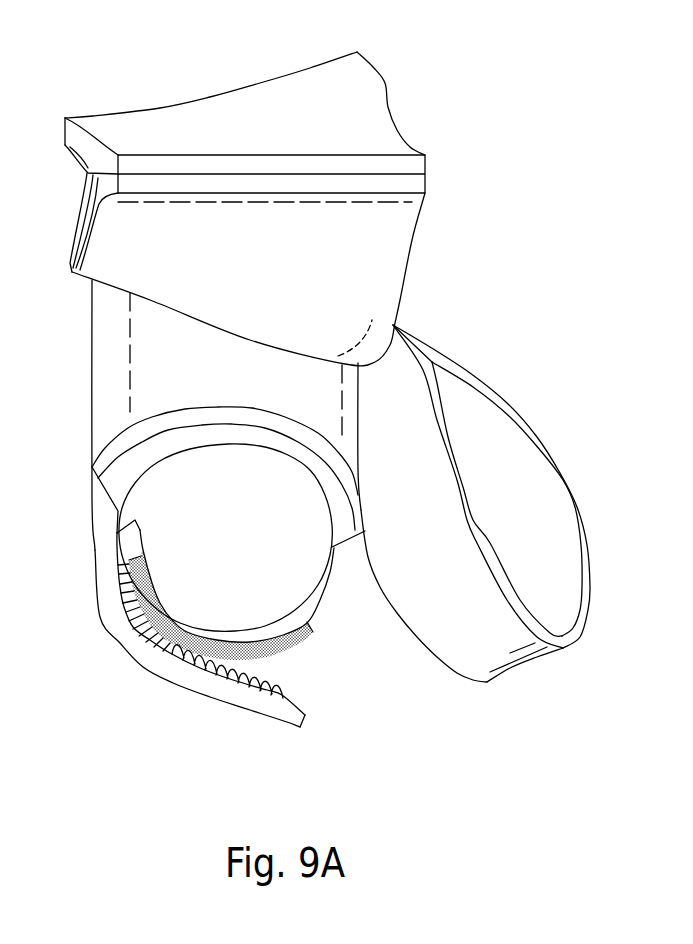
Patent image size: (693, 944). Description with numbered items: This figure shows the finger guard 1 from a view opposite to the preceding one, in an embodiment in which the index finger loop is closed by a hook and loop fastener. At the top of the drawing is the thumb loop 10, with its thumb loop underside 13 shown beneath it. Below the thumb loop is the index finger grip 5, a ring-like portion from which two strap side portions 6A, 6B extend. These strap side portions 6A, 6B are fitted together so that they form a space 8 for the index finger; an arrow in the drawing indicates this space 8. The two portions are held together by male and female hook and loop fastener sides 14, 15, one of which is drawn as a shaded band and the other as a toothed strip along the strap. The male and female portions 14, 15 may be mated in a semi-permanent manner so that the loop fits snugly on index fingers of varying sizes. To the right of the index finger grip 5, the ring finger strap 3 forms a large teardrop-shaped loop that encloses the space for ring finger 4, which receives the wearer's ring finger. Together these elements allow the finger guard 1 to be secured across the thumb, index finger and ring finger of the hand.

The finger guard 1 is at (441, 49).
The thumb loop 10 is at (176, 137).
The thumb loop underside 13 is at (130, 240).
The index finger grip 5 is at (147, 425).
The strap side portion 6A is at (120, 628).
The strap side portion 6B is at (318, 593).
The space 8 is at (162, 535).
The male hook and loop fastener side 14 is at (295, 640).
The female hook and loop fastener side 15 is at (283, 690).
The ring finger strap 3 is at (457, 642).
The space for ring finger 4 is at (516, 464).